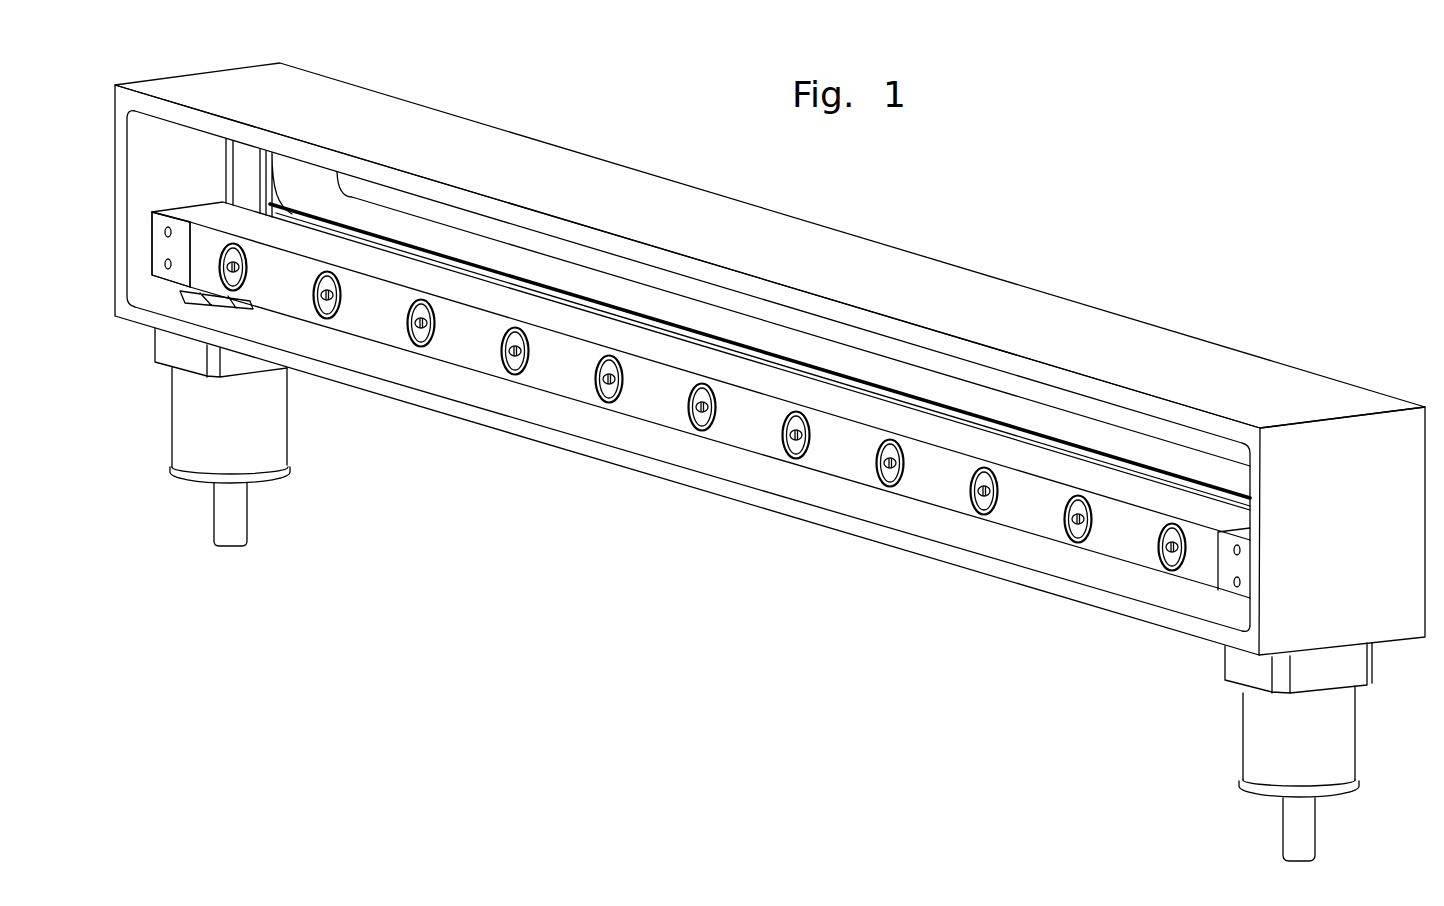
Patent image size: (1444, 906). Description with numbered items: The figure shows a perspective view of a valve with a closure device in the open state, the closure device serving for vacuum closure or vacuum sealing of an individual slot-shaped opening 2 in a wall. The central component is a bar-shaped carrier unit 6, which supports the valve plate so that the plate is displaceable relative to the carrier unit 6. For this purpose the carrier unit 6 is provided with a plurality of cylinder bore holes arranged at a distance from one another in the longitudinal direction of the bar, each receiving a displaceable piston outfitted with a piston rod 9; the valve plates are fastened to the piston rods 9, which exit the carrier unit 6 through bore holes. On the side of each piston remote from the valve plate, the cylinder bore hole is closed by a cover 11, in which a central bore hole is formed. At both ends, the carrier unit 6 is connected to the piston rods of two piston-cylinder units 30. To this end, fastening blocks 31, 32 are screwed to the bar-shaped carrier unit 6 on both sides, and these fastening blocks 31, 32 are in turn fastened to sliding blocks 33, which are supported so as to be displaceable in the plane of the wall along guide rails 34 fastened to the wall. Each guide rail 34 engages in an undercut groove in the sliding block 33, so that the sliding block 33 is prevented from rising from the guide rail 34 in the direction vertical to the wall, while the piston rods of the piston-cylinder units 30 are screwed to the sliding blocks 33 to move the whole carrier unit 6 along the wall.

The slot-shaped opening 2 is at (573, 253).
The carrier unit 6 is at (842, 504).
The piston rod 9 is at (613, 404).
The cover 11 is at (801, 458).
The piston-cylinder unit 30 is at (334, 448).
The fastening block 31 is at (190, 216).
The fastening block 32 is at (1232, 562).
The sliding block 33 is at (266, 196).
The guide rail 34 is at (250, 157).